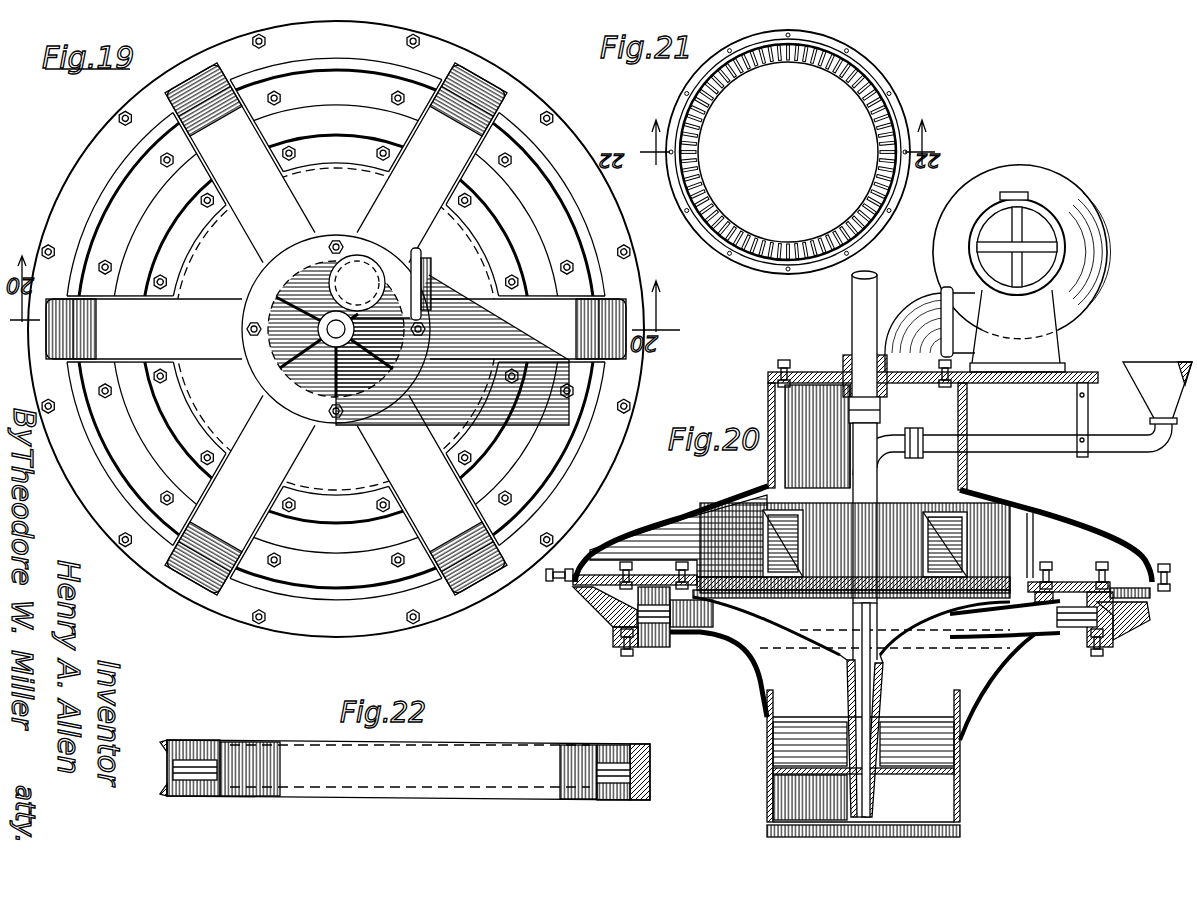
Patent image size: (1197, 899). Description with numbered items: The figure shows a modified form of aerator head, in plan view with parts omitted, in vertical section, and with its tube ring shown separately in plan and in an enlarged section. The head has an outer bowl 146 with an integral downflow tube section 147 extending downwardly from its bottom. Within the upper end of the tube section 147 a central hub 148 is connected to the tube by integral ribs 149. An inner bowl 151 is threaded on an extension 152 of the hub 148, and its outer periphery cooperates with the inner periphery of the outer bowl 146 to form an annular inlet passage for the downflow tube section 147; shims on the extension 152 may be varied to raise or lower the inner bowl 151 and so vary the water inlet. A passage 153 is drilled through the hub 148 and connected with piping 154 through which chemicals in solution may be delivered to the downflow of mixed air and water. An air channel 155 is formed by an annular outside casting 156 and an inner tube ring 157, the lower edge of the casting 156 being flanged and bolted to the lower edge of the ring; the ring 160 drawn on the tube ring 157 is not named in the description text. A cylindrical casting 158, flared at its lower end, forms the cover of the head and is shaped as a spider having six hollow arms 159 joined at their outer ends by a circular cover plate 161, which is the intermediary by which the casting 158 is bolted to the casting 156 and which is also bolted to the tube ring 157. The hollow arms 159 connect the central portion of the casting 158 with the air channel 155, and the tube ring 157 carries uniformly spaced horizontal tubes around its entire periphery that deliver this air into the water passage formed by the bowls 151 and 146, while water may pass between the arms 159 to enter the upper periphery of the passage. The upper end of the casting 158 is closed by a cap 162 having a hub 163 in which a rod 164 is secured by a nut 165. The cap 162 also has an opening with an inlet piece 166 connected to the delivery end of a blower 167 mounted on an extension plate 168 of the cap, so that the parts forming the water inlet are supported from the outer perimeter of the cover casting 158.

In FIG. 20, the outer bowl 146 is at (978, 645).
In FIG. 20, the downflow tube section 147 is at (960, 793).
In FIG. 20, the central hub 148 is at (882, 742).
In FIG. 20, the integral ribs 149 is at (903, 762).
In FIG. 20, the inner bowl 151 is at (948, 627).
In FIG. 20, the extension 152 is at (893, 687).
In FIG. 20, the passage 153 is at (862, 774).
In FIG. 20, the piping 154 is at (853, 482).
In FIG. 20, the air channel 155 is at (1122, 617).
In FIG. 20, the annular outside casting 156 is at (1126, 600).
In FIG. 21, the tube ring 157 is at (743, 255).
In FIG. 20, the tube ring 157 is at (1115, 630).
In FIG. 22, the tube ring 157 is at (457, 752).
In FIG. 19, the cylindrical casting 158 is at (356, 472).
In FIG. 20, the cylindrical casting 158 is at (968, 470).
In FIG. 19, the arms 159 is at (491, 575).
In FIG. 21, the ring 160 is at (690, 160).
In FIG. 20, the ring 160 is at (650, 650).
In FIG. 22, the ring 160 is at (203, 767).
In FIG. 19, the circular cover plate 161 is at (598, 457).
In FIG. 20, the circular cover plate 161 is at (597, 455).
In FIG. 20, the cap 162 is at (812, 374).
In FIG. 20, the hub 163 is at (847, 360).
In FIG. 20, the rod 164 is at (878, 296).
In FIG. 20, the nut 165 is at (850, 404).
In FIG. 19, the inlet piece 166 is at (398, 264).
In FIG. 20, the inlet piece 166 is at (941, 322).
In FIG. 20, the blower 167 is at (1082, 218).
In FIG. 19, the extension plate 168 is at (469, 302).
In FIG. 20, the extension plate 168 is at (1080, 372).